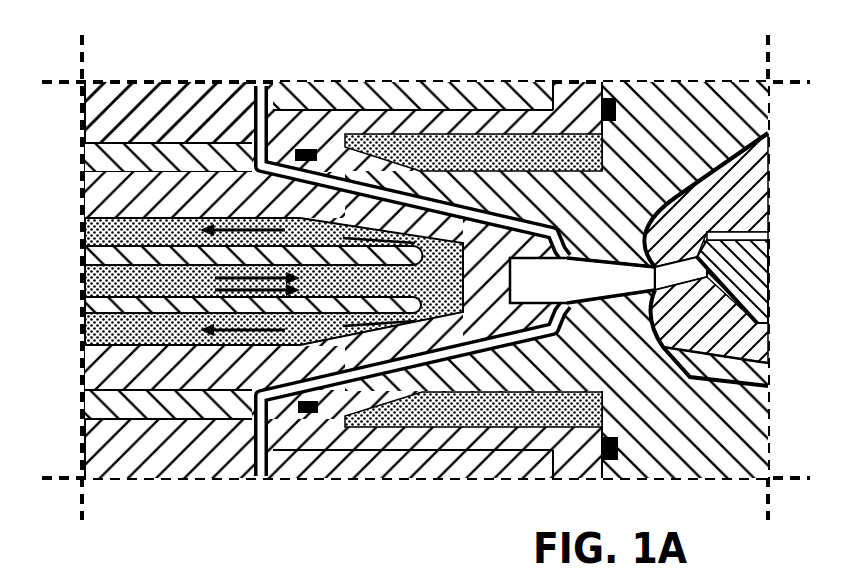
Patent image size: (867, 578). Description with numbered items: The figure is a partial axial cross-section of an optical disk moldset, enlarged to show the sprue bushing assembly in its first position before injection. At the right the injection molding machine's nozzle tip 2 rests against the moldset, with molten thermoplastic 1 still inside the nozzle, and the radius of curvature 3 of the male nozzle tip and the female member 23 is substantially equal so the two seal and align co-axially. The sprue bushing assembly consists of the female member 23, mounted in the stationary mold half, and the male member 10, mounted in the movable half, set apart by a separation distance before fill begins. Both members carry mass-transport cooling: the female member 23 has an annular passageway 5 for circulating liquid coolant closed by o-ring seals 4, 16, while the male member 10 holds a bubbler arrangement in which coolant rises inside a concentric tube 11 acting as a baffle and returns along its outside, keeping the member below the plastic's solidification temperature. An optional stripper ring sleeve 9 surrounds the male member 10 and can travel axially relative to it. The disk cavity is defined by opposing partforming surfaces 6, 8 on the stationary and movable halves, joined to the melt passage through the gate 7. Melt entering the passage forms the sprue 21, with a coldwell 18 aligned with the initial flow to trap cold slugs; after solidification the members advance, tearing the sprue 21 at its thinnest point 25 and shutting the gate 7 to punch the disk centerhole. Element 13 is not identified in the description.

The molten thermoplastic 1 is at (750, 249).
The nozzle tip 2 is at (742, 192).
The radius of curvature 3 is at (642, 200).
The o-ring seal 4 is at (606, 96).
The annular passageway 5 is at (490, 150).
The partforming surface 6 is at (355, 108).
The gate 7 is at (278, 150).
The partforming surface 8 is at (160, 100).
The stripper ring sleeve 9 is at (95, 161).
The male member 10 is at (92, 188).
The concentric tube 11 is at (97, 260).
The lower insulating layer 13 is at (80, 386).
The o-ring seal 16 is at (310, 416).
The coldwell 18 is at (515, 440).
The sprue 21 is at (528, 300).
The female member 23 is at (667, 460).
The thinnest point 25 is at (745, 358).